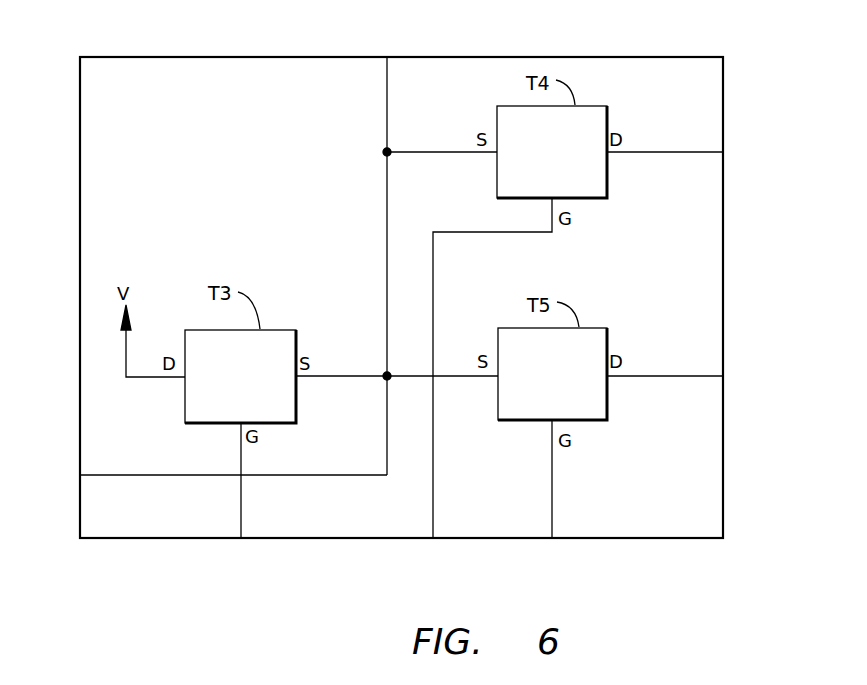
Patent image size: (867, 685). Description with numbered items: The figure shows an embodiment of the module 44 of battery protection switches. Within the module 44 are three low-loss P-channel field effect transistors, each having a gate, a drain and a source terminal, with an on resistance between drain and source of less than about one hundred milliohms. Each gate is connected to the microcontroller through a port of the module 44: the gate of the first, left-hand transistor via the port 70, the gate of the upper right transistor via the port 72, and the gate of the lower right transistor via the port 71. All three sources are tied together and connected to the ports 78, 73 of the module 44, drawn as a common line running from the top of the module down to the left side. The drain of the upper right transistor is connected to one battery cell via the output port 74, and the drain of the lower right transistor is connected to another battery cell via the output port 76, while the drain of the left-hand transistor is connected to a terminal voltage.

The module of battery protection switches 44 is at (641, 56).
The port 70 is at (241, 540).
The port 71 is at (552, 540).
The port 72 is at (433, 540).
The port 73 is at (79, 478).
The output port 74 is at (724, 143).
The output port 76 is at (724, 365).
The port 78 is at (387, 55).